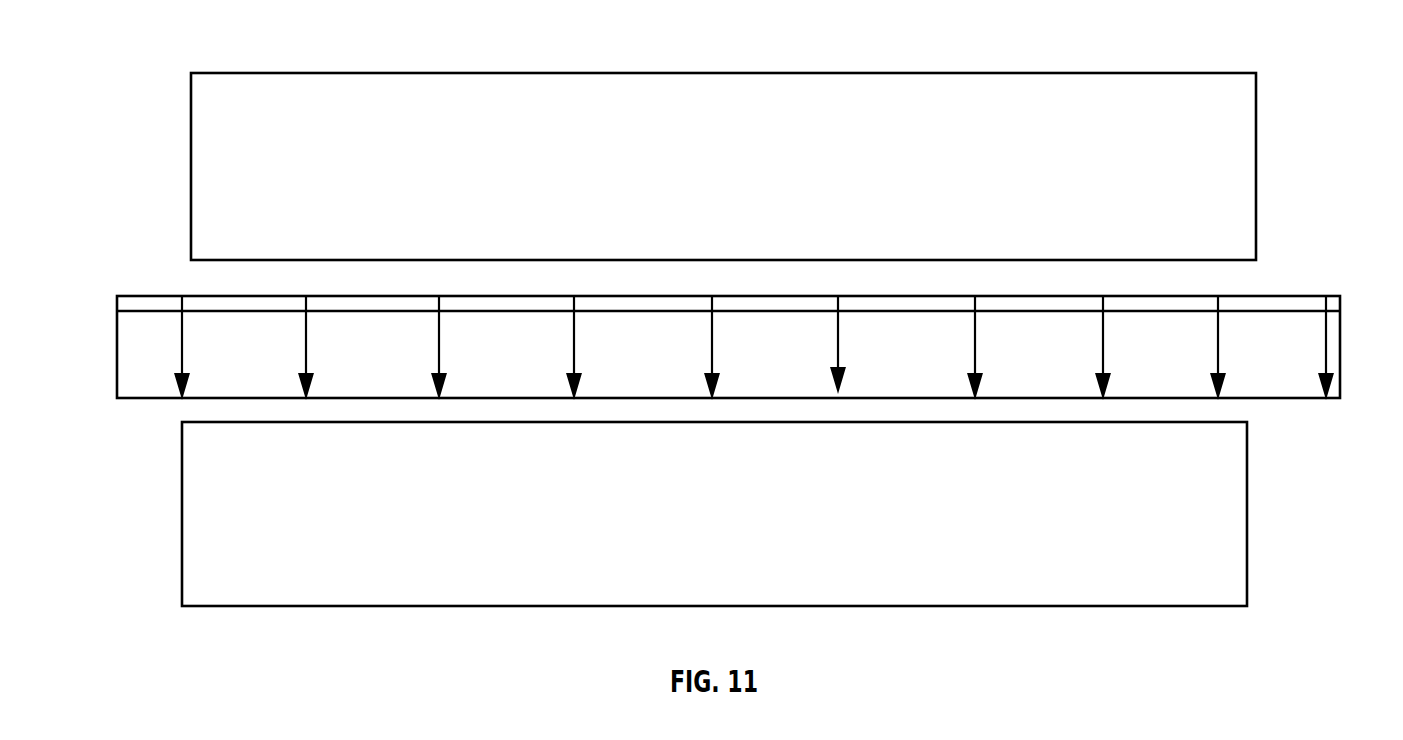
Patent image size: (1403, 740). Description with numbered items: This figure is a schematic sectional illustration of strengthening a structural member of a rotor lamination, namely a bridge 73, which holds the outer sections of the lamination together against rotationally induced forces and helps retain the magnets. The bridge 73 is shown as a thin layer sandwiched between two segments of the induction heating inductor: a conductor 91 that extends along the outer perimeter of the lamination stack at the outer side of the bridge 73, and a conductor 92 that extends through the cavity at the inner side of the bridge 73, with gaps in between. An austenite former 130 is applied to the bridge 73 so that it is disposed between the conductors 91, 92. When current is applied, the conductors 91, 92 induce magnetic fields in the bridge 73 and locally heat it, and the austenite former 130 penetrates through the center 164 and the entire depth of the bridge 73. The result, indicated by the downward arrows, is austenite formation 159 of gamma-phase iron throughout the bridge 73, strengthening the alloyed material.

The conductor 91 is at (695, 100).
The conductor 92 is at (1228, 520).
The austenite former 130 is at (127, 303).
The austenite formation 159 is at (1218, 323).
The center 164 is at (733, 328).
The bridge 73 is at (1330, 357).